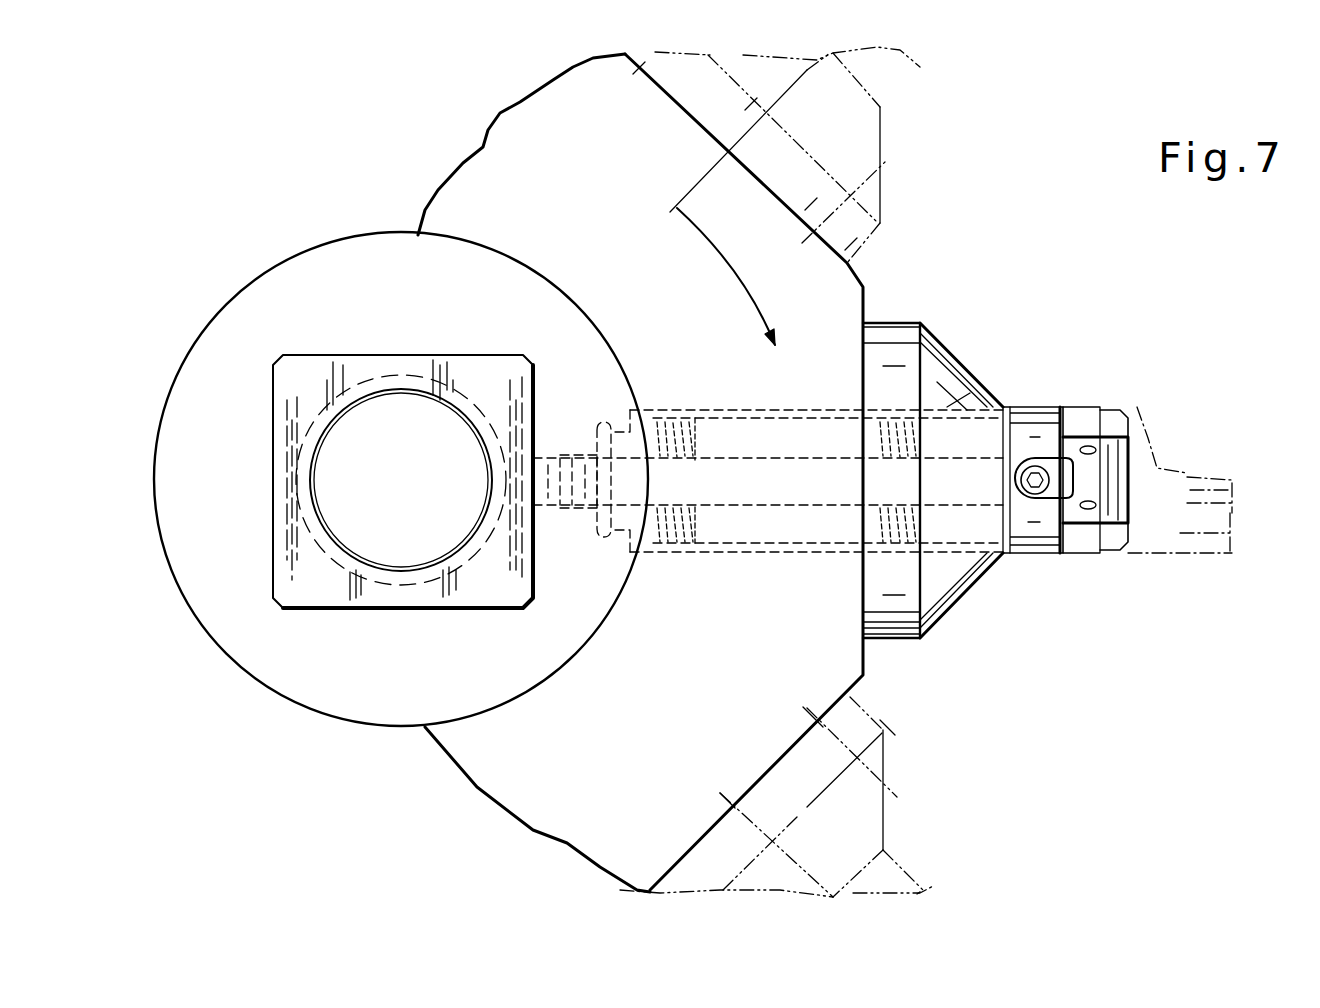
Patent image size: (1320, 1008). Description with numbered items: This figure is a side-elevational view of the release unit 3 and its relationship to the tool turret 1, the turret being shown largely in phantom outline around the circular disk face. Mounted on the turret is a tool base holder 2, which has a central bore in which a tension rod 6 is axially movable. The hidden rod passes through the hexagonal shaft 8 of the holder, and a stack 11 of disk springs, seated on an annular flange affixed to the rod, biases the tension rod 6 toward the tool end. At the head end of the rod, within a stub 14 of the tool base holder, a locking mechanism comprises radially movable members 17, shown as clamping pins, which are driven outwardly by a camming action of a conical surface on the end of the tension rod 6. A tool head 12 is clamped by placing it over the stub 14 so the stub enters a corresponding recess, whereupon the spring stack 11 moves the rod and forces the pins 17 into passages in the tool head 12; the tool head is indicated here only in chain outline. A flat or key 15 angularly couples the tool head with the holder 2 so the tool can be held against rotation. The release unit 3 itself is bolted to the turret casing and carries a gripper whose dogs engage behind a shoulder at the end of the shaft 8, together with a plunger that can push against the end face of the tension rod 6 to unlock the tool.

The tool turret 1 is at (762, 213).
The tool base holder 2 is at (940, 407).
The release unit 3 is at (487, 593).
The tension rod 6 is at (822, 490).
The shaft 8 is at (790, 412).
The stack of disk springs 11 is at (670, 537).
The tool head 12 is at (1230, 533).
The stub 14 is at (1092, 433).
The flat or key 15 is at (1053, 488).
The radially movable members 17 is at (1108, 540).